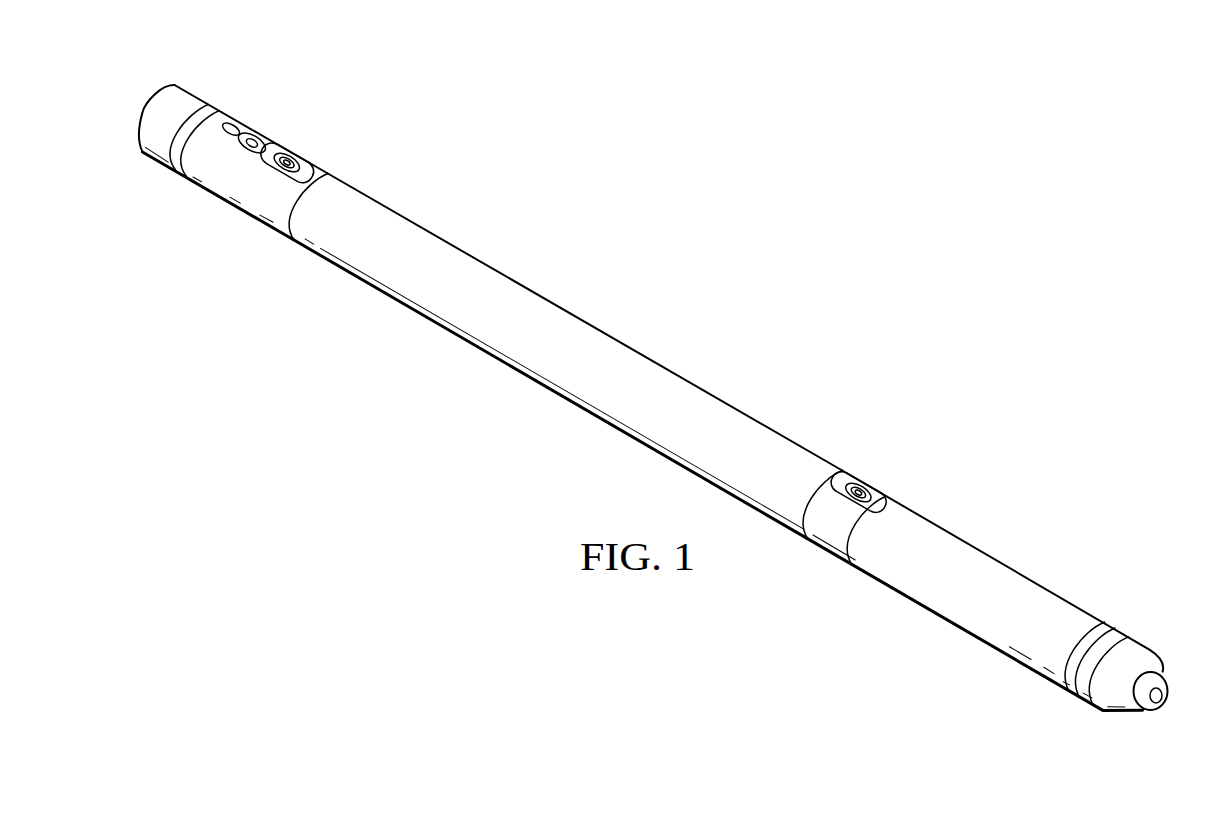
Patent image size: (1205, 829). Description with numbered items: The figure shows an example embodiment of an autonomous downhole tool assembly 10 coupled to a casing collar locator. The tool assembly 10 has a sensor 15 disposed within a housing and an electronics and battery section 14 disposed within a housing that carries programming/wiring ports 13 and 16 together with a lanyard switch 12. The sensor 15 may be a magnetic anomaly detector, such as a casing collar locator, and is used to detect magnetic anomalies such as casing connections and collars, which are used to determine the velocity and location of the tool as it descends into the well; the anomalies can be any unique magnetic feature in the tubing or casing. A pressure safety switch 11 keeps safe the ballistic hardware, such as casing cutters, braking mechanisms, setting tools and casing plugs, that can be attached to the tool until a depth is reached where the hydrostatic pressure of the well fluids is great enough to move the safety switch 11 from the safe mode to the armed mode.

The tool assembly 10 is at (435, 231).
The pressure safety switch 11 is at (234, 123).
The lanyard switch 12 is at (252, 138).
The programming/wiring port 13 is at (290, 161).
The electronics and battery section 14 is at (573, 310).
The sensor 15 is at (983, 548).
The programming/wiring port 16 is at (862, 492).